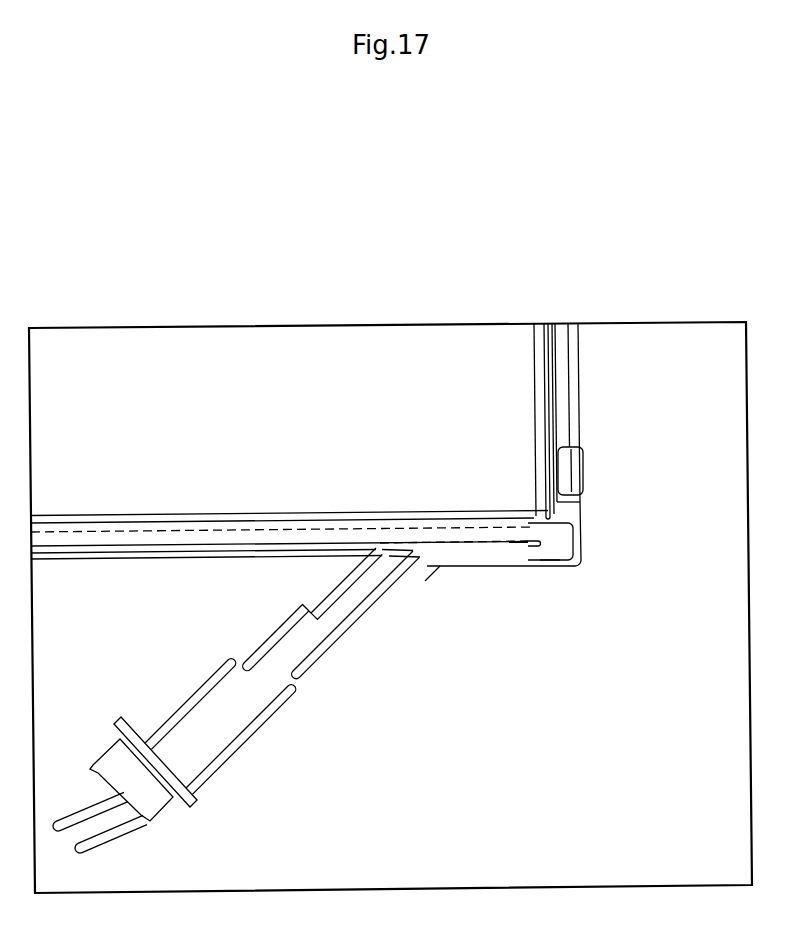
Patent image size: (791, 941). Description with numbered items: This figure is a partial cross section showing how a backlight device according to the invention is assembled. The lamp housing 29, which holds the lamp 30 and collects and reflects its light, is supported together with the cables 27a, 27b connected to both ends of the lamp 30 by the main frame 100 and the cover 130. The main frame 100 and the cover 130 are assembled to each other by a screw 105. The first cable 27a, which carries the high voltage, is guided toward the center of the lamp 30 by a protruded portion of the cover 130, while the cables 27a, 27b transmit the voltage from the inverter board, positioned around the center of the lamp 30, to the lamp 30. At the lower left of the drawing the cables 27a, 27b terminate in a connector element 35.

The main frame 100 is at (558, 402).
The screw 105 is at (586, 462).
The cover 130 is at (581, 528).
The lamp housing 29 is at (326, 511).
The lamp 30 is at (456, 526).
The first cable 27a is at (322, 662).
The cable 27b is at (240, 660).
The plug 35 is at (178, 822).